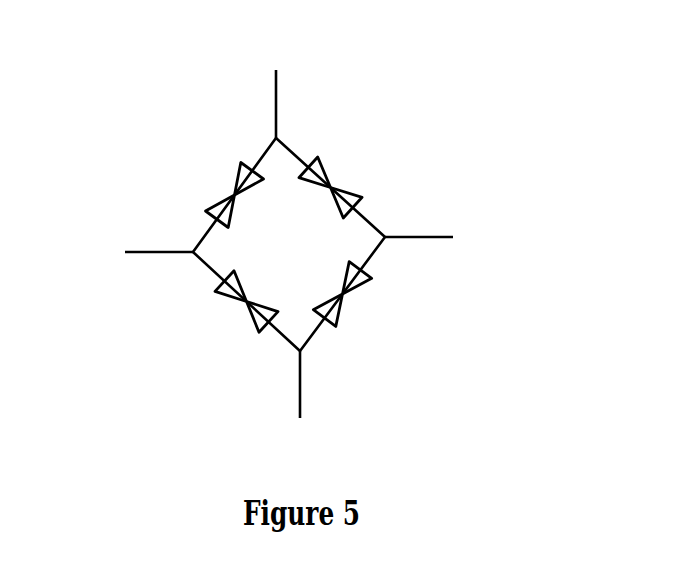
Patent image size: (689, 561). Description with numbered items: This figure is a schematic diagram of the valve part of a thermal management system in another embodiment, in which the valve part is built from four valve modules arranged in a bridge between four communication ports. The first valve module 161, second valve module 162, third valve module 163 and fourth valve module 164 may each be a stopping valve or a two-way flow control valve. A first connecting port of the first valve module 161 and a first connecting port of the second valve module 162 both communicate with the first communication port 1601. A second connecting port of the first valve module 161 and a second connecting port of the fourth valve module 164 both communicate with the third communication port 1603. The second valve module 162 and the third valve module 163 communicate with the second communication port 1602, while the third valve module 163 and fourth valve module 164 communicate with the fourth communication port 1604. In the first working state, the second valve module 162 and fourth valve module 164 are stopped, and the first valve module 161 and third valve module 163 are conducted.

The first valve module 161 is at (340, 173).
The second valve module 162 is at (353, 302).
The third valve module 163 is at (233, 309).
The fourth valve module 164 is at (223, 180).
The first communication port 1601 is at (468, 244).
The second communication port 1602 is at (351, 398).
The third communication port 1603 is at (283, 77).
The fourth communication port 1604 is at (124, 256).